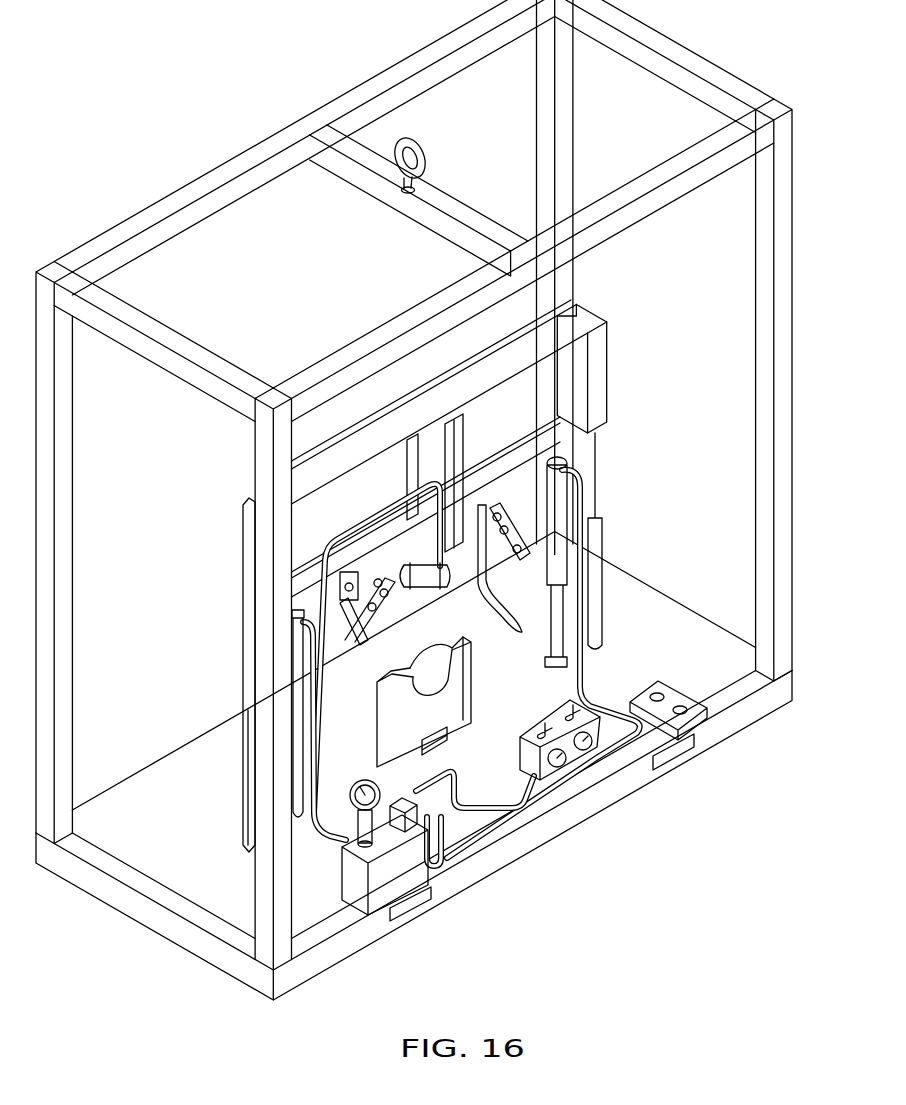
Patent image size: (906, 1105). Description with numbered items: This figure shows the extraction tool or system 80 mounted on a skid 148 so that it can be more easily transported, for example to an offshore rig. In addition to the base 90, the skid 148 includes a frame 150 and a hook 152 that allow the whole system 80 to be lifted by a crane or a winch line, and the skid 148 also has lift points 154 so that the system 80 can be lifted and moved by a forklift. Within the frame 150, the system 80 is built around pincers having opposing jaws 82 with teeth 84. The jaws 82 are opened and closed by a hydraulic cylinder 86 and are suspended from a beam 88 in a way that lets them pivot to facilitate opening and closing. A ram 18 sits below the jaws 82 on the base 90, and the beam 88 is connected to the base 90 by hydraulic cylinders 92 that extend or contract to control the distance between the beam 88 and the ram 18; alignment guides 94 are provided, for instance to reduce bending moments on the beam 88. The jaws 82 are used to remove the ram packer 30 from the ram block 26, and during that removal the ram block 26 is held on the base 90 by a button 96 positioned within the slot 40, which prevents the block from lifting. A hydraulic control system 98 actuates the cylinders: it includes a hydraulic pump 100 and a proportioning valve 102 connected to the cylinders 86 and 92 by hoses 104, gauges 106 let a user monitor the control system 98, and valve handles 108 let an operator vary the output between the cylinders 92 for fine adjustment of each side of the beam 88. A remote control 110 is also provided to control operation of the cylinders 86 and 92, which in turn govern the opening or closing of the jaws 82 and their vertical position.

The skid 148 is at (178, 135).
The frame 150 is at (66, 398).
The hook 152 is at (418, 140).
The extraction tool or system 80 is at (400, 386).
The beam 88 is at (357, 451).
The hydraulic cylinder 86 is at (453, 550).
The hydraulic cylinders 92 is at (293, 642).
The jaws 82 is at (388, 624).
The alignment guides 94 is at (247, 740).
The ram packer 30 is at (455, 643).
The teeth 84 is at (368, 660).
The hoses 104 is at (337, 845).
The remote control 110 is at (672, 690).
The ram 18 is at (368, 750).
The ram block 26 is at (463, 727).
The proportioning valve 102 is at (570, 700).
The valve handles 108 is at (573, 717).
The button 96 is at (443, 744).
The slot 40 is at (440, 756).
The gauges 106 is at (354, 789).
The base 90 is at (171, 763).
The hydraulic pump 100 is at (422, 882).
The lift points 154 is at (673, 753).
The hydraulic control system 98 is at (570, 858).